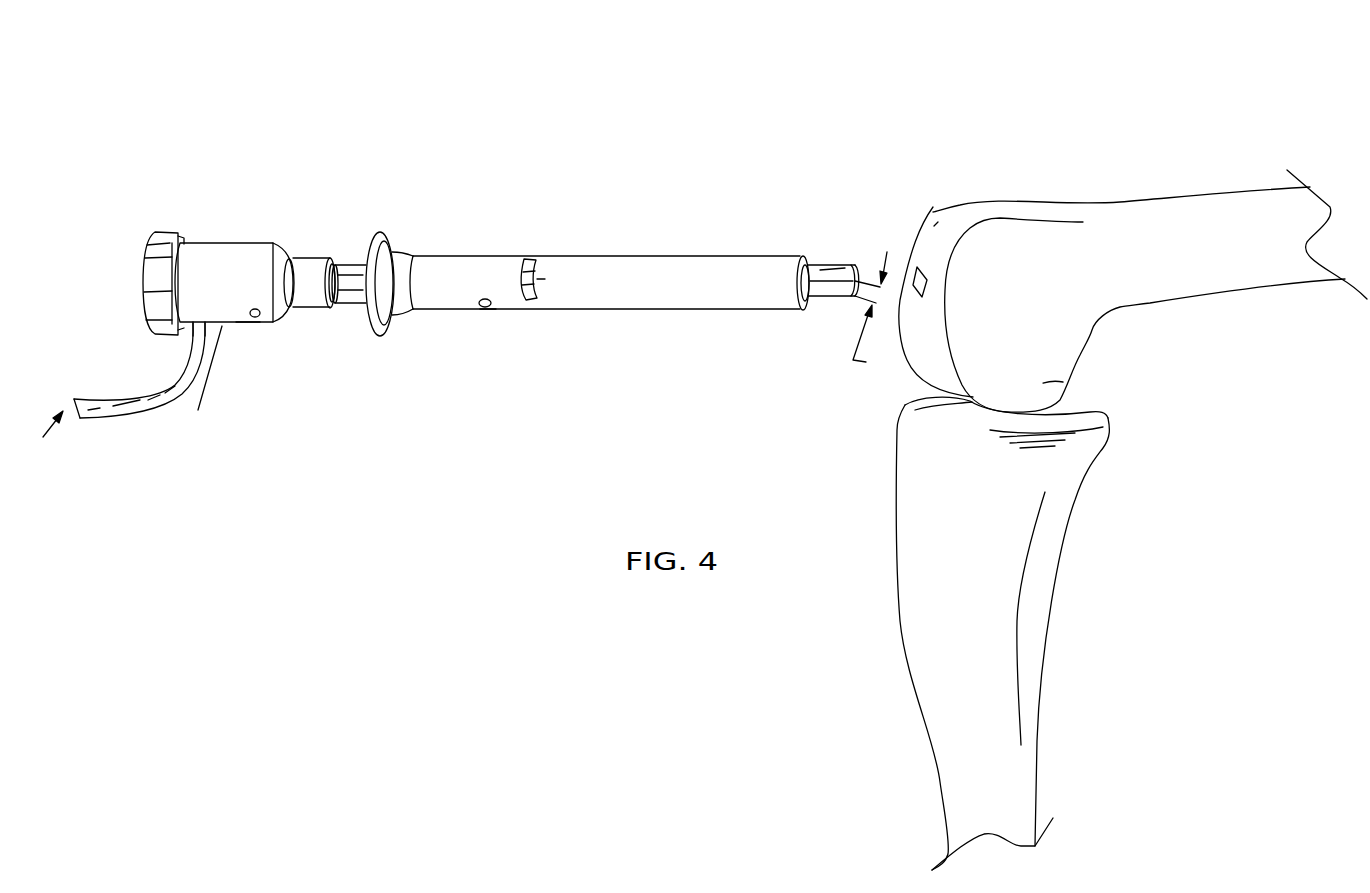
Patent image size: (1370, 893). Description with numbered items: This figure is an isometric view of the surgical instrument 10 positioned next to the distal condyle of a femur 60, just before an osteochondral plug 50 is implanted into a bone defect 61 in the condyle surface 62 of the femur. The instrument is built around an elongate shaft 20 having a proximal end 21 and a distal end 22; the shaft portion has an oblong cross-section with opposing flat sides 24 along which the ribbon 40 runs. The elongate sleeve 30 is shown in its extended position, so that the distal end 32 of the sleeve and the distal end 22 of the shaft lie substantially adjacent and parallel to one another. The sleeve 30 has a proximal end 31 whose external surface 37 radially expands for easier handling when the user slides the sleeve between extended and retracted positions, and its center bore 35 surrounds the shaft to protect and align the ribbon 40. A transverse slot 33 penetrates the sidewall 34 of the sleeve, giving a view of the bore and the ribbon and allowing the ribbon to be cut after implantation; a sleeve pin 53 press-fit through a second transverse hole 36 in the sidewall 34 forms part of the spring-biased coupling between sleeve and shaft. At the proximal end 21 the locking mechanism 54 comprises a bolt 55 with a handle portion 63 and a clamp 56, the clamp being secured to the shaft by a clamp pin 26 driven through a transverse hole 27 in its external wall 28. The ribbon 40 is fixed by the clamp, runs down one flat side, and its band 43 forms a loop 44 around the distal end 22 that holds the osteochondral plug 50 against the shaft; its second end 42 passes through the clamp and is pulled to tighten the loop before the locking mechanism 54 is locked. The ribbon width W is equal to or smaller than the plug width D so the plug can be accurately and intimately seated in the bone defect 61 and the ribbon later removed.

The surgical instrument 10 is at (517, 125).
The elongate shaft 20 is at (347, 242).
The proximal end 21 is at (288, 264).
The distal end 22 is at (818, 266).
The flat sides 24 is at (351, 262).
The clamp pin 26 is at (262, 318).
The transverse hole 27 is at (248, 323).
The external wall 28 is at (228, 253).
The elongate sleeve 30 is at (665, 328).
The proximal end 31 is at (393, 240).
The distal end 32 is at (804, 308).
The transverse slot 33 is at (528, 300).
The sidewall 34 is at (534, 262).
The center bore 35 is at (810, 300).
The second transverse hole 36 is at (490, 309).
The external surface 37 is at (487, 263).
The ribbon 40 is at (142, 409).
The second end 42 is at (77, 410).
The band 43 is at (537, 279).
The loop 44 is at (832, 265).
The osteochondral plug 50 is at (836, 304).
The sleeve pin 53 is at (483, 308).
The locking mechanism 54 is at (203, 222).
The bolt 55 is at (127, 277).
The clamp 56 is at (200, 413).
The femur 60 is at (1189, 317).
The bone defect 61 is at (912, 258).
The femoral cortex 62 is at (934, 226).
The handle portion 63 is at (157, 247).
The width of ribbon W is at (78, 388).
The width of osteochondral plug D is at (871, 315).